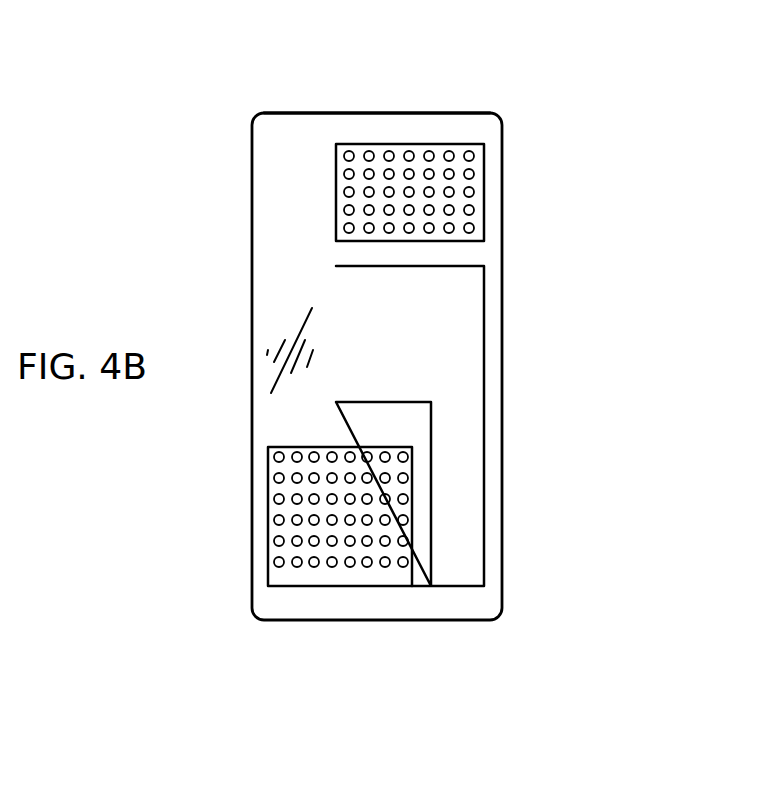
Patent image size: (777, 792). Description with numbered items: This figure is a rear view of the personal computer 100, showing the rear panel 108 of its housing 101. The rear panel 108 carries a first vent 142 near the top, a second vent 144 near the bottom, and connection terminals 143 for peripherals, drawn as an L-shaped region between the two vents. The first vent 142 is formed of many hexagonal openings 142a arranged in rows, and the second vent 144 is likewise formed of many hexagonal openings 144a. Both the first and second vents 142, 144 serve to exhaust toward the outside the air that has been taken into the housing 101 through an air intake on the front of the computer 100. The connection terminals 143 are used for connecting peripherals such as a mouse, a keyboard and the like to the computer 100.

The computer 100 is at (465, 92).
The housing 101 is at (312, 113).
The rear panel 108 is at (277, 265).
The first vent 142 is at (494, 195).
The hexagonal openings 142a is at (474, 228).
The connection terminals 143 is at (485, 410).
The second vent 144 is at (353, 569).
The hexagonal openings 144a is at (296, 566).